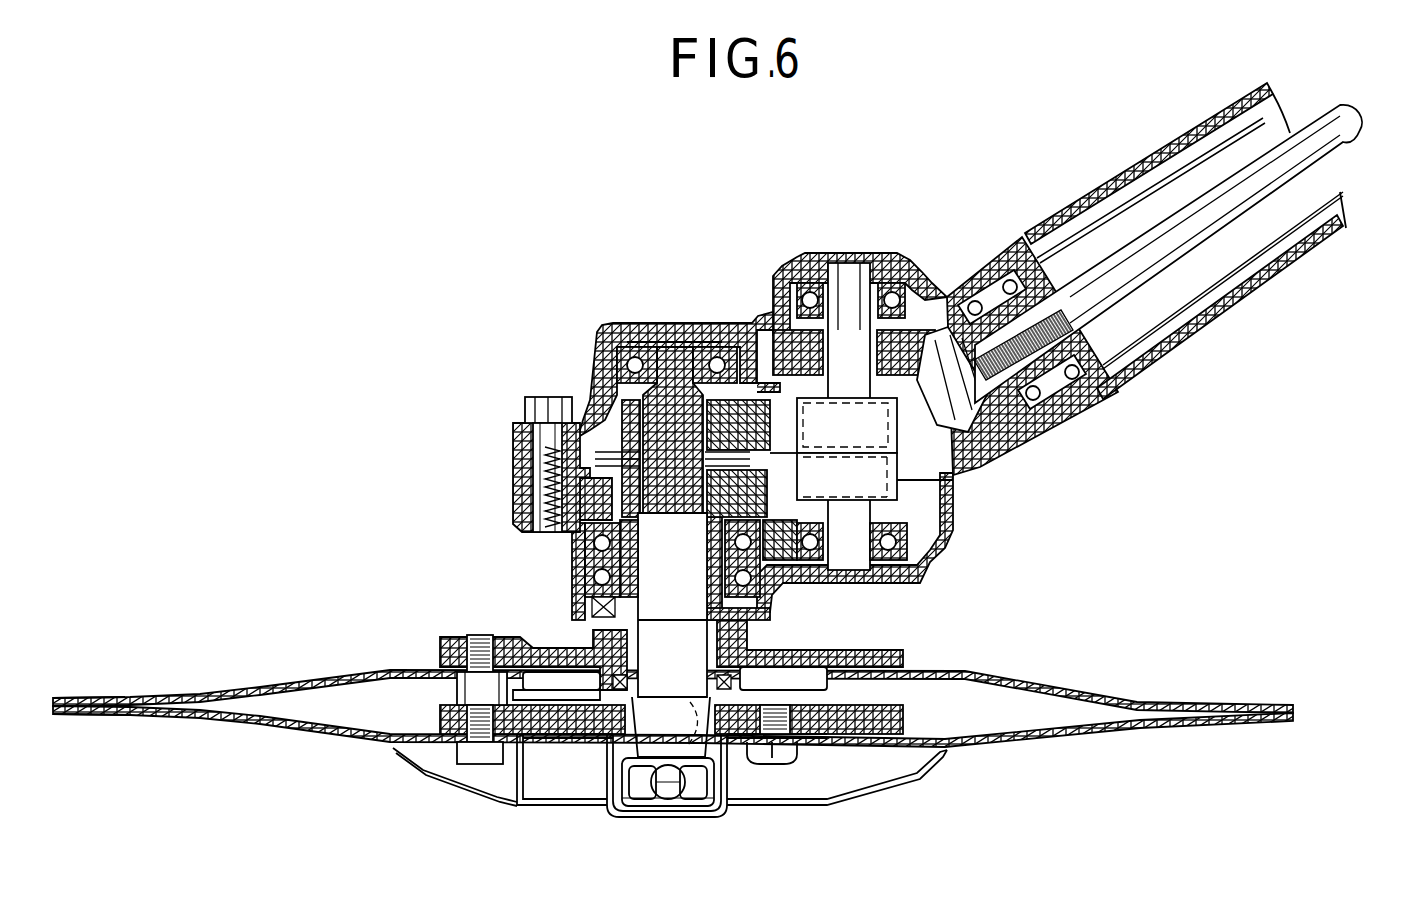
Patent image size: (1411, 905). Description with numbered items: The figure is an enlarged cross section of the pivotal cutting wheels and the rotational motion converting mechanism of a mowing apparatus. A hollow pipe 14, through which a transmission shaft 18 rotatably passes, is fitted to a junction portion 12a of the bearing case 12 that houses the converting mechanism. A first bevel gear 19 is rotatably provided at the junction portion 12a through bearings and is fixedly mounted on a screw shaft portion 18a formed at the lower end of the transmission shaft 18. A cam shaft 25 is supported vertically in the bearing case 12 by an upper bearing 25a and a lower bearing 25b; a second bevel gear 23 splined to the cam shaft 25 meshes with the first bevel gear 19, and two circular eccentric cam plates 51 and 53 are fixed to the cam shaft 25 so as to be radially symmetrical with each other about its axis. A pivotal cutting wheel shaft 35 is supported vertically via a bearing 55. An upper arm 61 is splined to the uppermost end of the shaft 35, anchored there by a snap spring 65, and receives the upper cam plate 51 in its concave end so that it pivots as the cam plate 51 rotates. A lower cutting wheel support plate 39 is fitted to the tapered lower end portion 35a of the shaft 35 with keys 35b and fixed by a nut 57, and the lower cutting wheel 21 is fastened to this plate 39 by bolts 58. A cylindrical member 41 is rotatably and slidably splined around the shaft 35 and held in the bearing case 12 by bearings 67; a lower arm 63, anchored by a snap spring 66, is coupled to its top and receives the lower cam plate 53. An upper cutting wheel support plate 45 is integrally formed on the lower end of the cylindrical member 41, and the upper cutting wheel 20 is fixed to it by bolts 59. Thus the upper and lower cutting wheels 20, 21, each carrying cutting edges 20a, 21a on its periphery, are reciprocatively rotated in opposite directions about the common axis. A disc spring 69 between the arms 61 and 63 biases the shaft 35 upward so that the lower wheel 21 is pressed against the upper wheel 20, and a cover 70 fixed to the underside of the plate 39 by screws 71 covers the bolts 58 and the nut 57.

The bearing case 12 is at (650, 327).
The junction portion 12a is at (1025, 230).
The hollow pipe 14 is at (1327, 217).
The transmission shaft 18 is at (1317, 127).
The screw shaft portion 18a is at (1020, 357).
The first bevel gear 19 is at (950, 320).
The upper cutting wheel 20 is at (321, 668).
The cutting edges 20a is at (121, 697).
The lower cutting wheel 21 is at (313, 735).
The cutting edges 21a is at (130, 717).
The second bevel gear 23 is at (897, 340).
The cam shaft 25 is at (853, 300).
The upper bearing 25a is at (793, 277).
The lower bearing 25b is at (887, 543).
The pivotal cutting wheel shaft 35 is at (663, 580).
The tapered lower end portion 35a is at (650, 723).
The keys 35b is at (627, 823).
The lower cutting wheel support plate 39 is at (865, 732).
The cylindrical member 41 is at (530, 508).
The upper cutting wheel support plate 45 is at (830, 660).
The upper cam plate 51 is at (892, 433).
The lower cam plate 53 is at (893, 503).
The bearing 55 is at (610, 333).
The nut 57 is at (730, 807).
The bolts 58 is at (473, 757).
The bolts 59 is at (487, 682).
The upper arm 61 is at (733, 413).
The lower arm 63 is at (747, 487).
The snap spring 65 is at (633, 397).
The snap spring 66 is at (518, 473).
The bearings 67 is at (590, 540).
The disc spring 69 is at (523, 405).
The cover 70 is at (603, 763).
The screws 71 is at (783, 753).